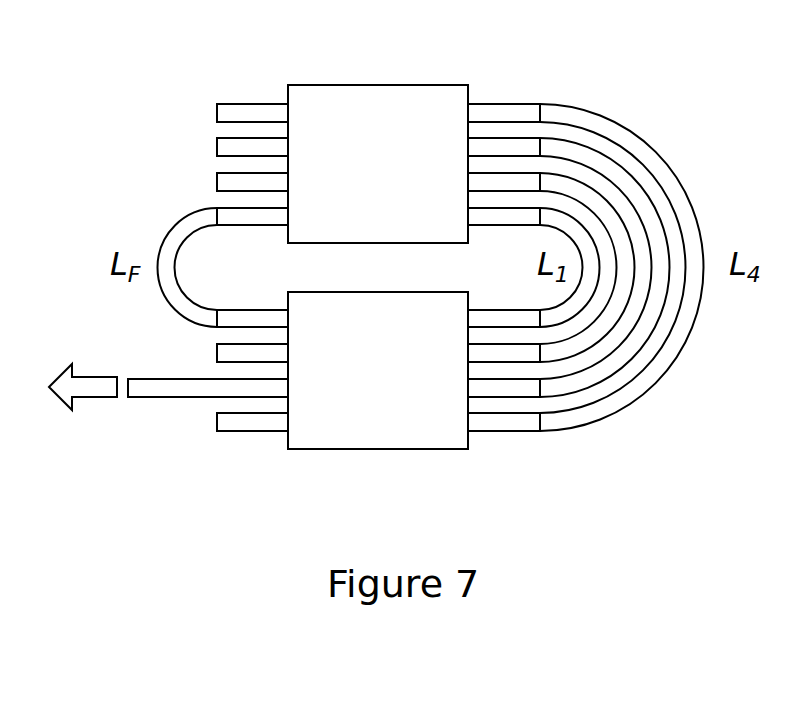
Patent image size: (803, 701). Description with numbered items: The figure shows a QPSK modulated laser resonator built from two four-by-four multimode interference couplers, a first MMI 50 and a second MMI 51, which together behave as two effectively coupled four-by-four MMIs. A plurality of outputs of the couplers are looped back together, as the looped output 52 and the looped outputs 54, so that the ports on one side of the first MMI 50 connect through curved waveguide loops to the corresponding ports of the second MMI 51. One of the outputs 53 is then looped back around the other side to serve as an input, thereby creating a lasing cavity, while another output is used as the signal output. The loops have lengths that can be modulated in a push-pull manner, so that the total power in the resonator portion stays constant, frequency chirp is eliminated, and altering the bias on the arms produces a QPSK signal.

The 4×4 MMI 50 is at (375, 85).
The 4×4 MMI 51 is at (342, 446).
The looped output 52 is at (507, 217).
The looped-back output 53 is at (190, 222).
The looped outputs 54 is at (623, 140).